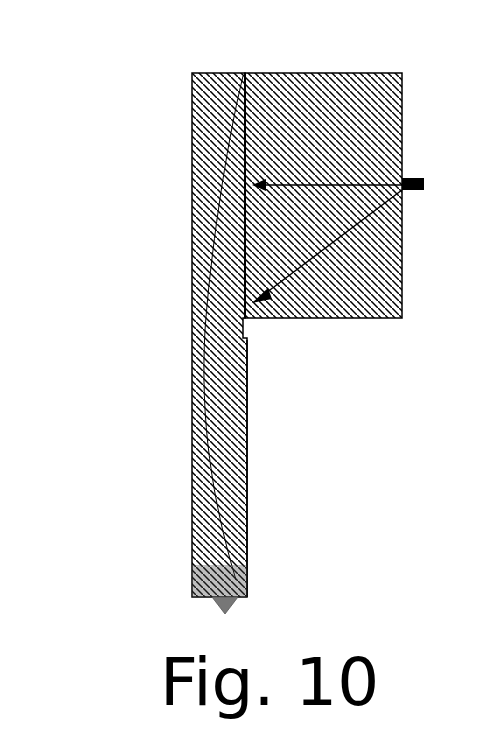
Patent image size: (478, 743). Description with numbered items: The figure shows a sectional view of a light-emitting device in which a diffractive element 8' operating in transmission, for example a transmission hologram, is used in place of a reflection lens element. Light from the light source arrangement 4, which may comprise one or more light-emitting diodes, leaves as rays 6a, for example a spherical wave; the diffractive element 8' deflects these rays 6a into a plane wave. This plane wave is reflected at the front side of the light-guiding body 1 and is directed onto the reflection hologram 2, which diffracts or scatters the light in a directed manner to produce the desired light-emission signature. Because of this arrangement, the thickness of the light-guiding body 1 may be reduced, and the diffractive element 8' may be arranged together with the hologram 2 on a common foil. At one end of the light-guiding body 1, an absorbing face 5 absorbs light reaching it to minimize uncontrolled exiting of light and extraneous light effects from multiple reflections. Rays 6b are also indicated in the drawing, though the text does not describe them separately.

The light-guiding body 1 is at (235, 322).
The reflection hologram 2 is at (254, 476).
The light source arrangement 4 is at (413, 158).
The absorbing face 5 is at (238, 608).
The rays 6a is at (362, 73).
The vertical housing bar 6b is at (186, 358).
The diffractive element 8' is at (133, 316).